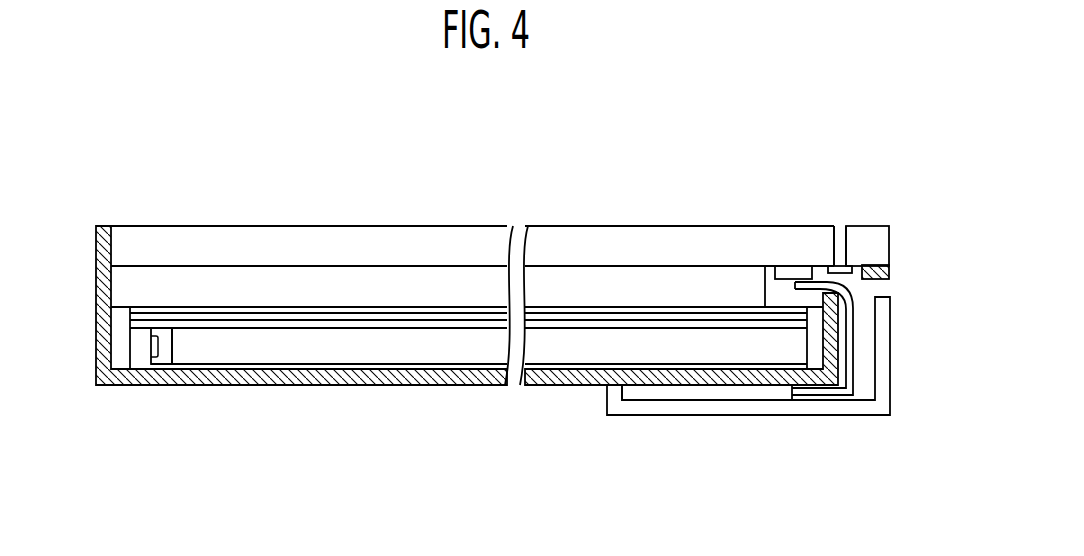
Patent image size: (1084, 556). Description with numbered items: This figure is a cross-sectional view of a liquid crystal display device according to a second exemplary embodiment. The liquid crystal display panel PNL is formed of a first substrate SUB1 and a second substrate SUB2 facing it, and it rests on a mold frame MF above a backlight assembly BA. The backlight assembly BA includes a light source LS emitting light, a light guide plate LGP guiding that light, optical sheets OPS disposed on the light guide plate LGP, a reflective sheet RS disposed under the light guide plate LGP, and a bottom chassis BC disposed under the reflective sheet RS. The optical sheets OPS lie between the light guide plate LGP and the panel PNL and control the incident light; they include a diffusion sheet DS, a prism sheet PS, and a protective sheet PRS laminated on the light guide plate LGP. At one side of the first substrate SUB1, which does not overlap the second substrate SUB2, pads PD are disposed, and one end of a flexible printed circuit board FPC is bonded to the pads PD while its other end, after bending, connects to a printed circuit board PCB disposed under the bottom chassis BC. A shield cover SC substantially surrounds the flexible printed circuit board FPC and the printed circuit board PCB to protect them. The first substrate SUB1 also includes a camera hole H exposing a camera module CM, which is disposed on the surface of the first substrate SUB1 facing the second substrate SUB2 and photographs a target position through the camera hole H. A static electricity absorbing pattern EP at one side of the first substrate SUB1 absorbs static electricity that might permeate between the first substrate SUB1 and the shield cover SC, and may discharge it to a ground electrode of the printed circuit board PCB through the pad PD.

The liquid crystal display panel PNL is at (472, 219).
The first substrate SUB1 is at (287, 240).
The second substrate SUB2 is at (270, 176).
The pad PD is at (793, 272).
The camera hole H is at (841, 224).
The static electricity absorbing pattern EP is at (889, 272).
The camera module CM is at (848, 277).
The shield cover SC is at (878, 398).
The mold frame MF is at (119, 363).
The light source LS is at (141, 363).
The light guide plate LGP is at (213, 352).
The reflective sheet RS is at (257, 367).
The protective sheet PRS is at (308, 310).
The prism sheet PS is at (350, 318).
The diffusion sheet DS is at (468, 389).
The optical sheets OPS is at (468, 399).
The backlight assembly BA is at (468, 418).
The bottom chassis BC is at (477, 380).
The printed circuit board PCB is at (703, 393).
The flexible printed circuit board FPC is at (822, 393).